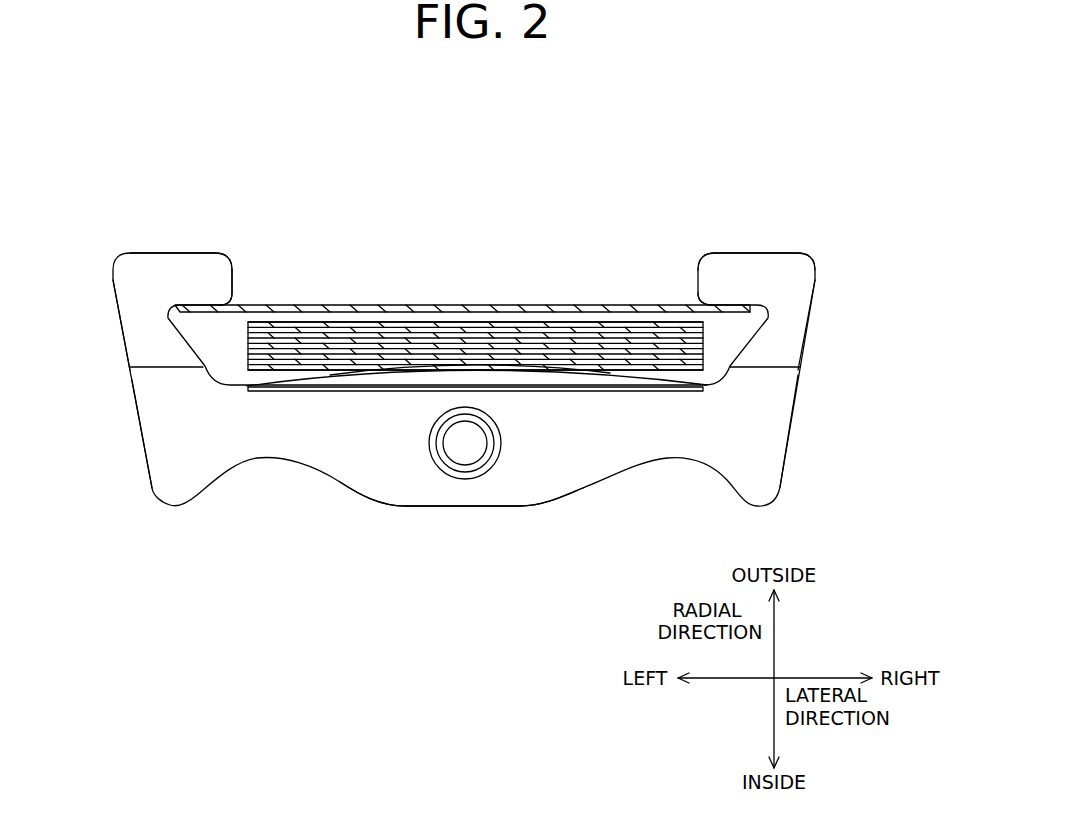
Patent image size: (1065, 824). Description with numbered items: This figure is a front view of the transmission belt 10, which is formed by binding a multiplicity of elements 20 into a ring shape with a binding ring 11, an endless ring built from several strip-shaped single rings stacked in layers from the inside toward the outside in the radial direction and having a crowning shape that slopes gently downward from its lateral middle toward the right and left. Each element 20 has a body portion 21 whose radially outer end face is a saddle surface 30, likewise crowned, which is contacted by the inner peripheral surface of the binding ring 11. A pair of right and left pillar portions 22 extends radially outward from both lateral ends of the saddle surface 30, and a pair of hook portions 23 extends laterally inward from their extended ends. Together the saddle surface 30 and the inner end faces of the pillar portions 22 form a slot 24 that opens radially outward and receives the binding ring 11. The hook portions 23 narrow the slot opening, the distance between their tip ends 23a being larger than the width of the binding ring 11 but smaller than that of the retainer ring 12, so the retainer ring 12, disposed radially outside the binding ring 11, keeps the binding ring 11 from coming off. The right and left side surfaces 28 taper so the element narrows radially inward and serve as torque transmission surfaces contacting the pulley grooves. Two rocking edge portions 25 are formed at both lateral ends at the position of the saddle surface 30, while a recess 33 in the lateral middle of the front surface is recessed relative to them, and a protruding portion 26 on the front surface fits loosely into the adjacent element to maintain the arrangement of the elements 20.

The transmission belt 10 is at (718, 158).
The binding ring 11 is at (377, 318).
The retainer ring 12 is at (507, 308).
The element 20 is at (630, 489).
The body portion 21 is at (538, 493).
The pillar portions 22 is at (137, 310).
The hook portions 23 is at (173, 262).
The tip ends 23a is at (223, 263).
The slot 24 is at (578, 285).
The rocking edge portions 25 is at (157, 367).
The protruding portion 26 is at (465, 480).
The side surfaces 28 is at (143, 437).
The saddle surface 30 is at (332, 374).
The recess 33 is at (428, 378).